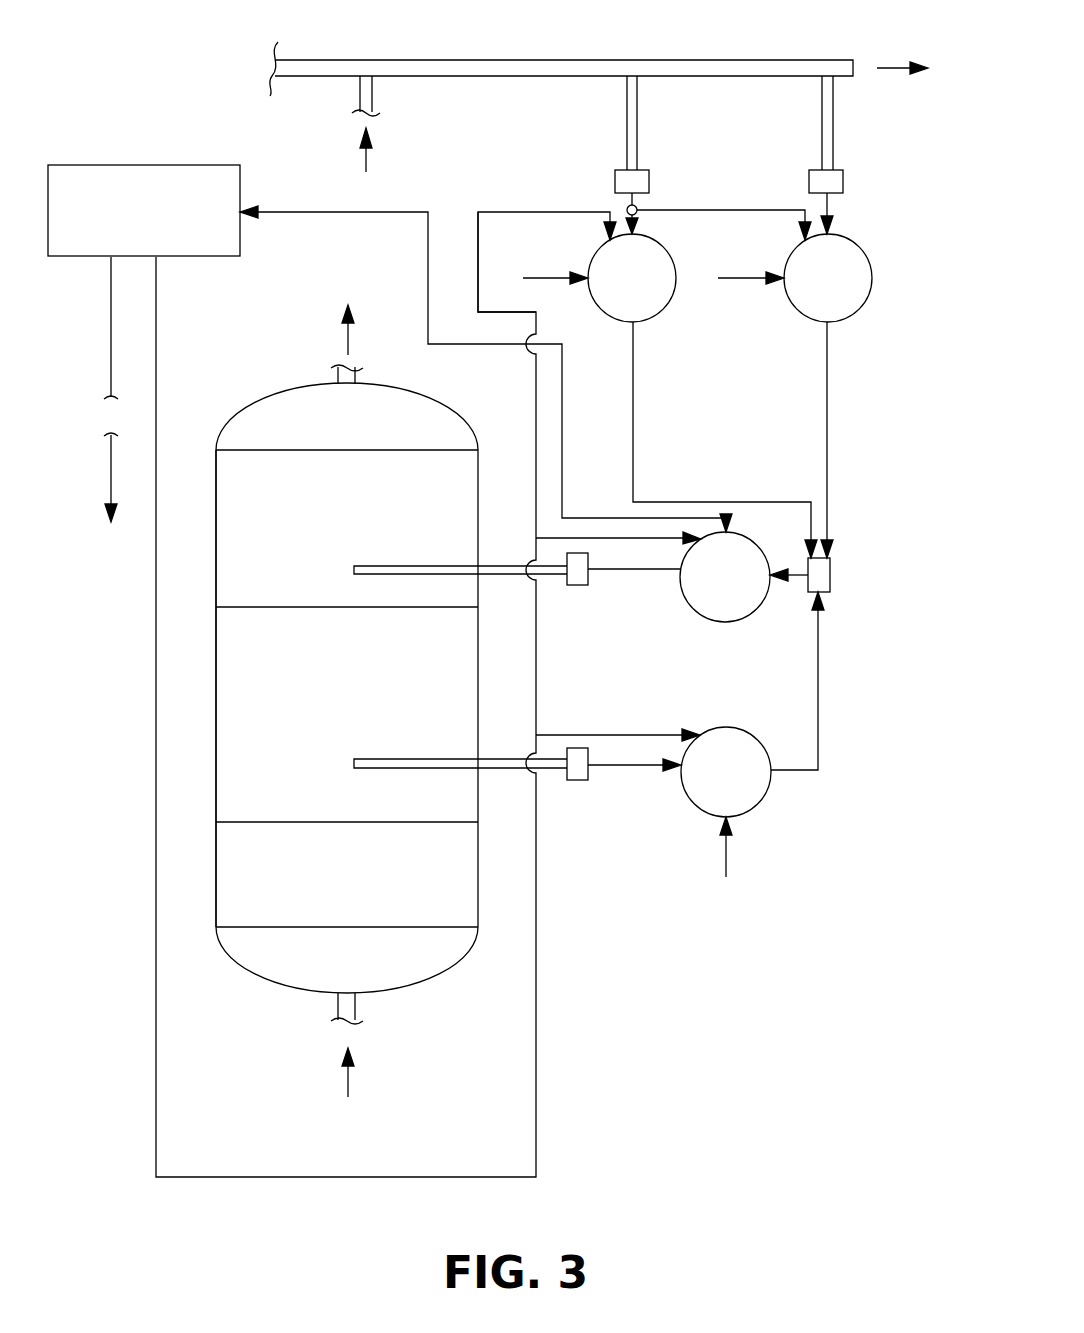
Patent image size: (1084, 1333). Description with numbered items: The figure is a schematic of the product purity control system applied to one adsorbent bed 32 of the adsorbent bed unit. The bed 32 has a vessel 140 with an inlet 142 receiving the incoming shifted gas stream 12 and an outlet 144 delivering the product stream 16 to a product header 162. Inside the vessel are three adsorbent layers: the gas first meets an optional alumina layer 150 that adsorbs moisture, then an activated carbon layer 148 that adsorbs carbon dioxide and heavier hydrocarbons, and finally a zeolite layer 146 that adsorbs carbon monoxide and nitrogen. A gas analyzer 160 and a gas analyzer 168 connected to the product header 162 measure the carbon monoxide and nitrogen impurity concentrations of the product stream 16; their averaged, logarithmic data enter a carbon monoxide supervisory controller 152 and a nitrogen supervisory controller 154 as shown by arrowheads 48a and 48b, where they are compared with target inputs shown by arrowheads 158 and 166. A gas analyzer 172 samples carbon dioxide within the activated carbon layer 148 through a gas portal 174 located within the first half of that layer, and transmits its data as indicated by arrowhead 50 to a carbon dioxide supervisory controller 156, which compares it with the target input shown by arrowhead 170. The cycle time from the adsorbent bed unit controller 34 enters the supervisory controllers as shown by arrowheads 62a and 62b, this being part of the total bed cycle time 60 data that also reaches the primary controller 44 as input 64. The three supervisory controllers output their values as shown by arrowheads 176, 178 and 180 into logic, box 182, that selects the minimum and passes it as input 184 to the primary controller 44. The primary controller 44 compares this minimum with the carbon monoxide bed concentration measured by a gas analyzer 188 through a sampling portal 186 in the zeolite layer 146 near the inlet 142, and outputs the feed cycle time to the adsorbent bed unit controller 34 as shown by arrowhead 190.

The shifted gas stream 12 is at (350, 1080).
The product stream 16 is at (890, 63).
The adsorbent bed 32 is at (456, 998).
The adsorbent bed unit controller 34 is at (212, 188).
The primary controller 44 is at (770, 532).
The arrowhead 48a is at (636, 200).
The arrowhead 48b is at (831, 207).
The arrowhead 50 is at (638, 767).
The total bed cycle time 60 is at (538, 1022).
The arrowhead 62a is at (492, 182).
The arrowhead 62b is at (610, 733).
The input 64 is at (610, 538).
The vessel 140 is at (480, 853).
The inlet 142 is at (352, 993).
The outlet 144 is at (353, 383).
The zeolite layer 146 is at (227, 575).
The activated carbon layer 148 is at (227, 688).
The alumina layer 150 is at (227, 847).
The carbon monoxide supervisory controller 152 is at (618, 320).
The nitrogen supervisory controller 154 is at (872, 279).
The carbon dioxide supervisory controller 156 is at (737, 805).
The arrowhead 158 is at (550, 280).
The gas analyzer 160 is at (592, 195).
The product header 162 is at (698, 72).
The arrowhead 166 is at (737, 280).
The gas analyzer 168 is at (838, 183).
The arrowhead 170 is at (727, 857).
The gas analyzer 172 is at (588, 760).
The gas portal 174 is at (500, 760).
The arrowhead 176 is at (633, 447).
The arrowhead 178 is at (827, 438).
The arrowhead 180 is at (818, 690).
The box 182 is at (830, 575).
The input 184 is at (793, 597).
The sampling portal 186 is at (417, 577).
The gas analyzer 188 is at (588, 577).
The arrowhead 190 is at (410, 182).